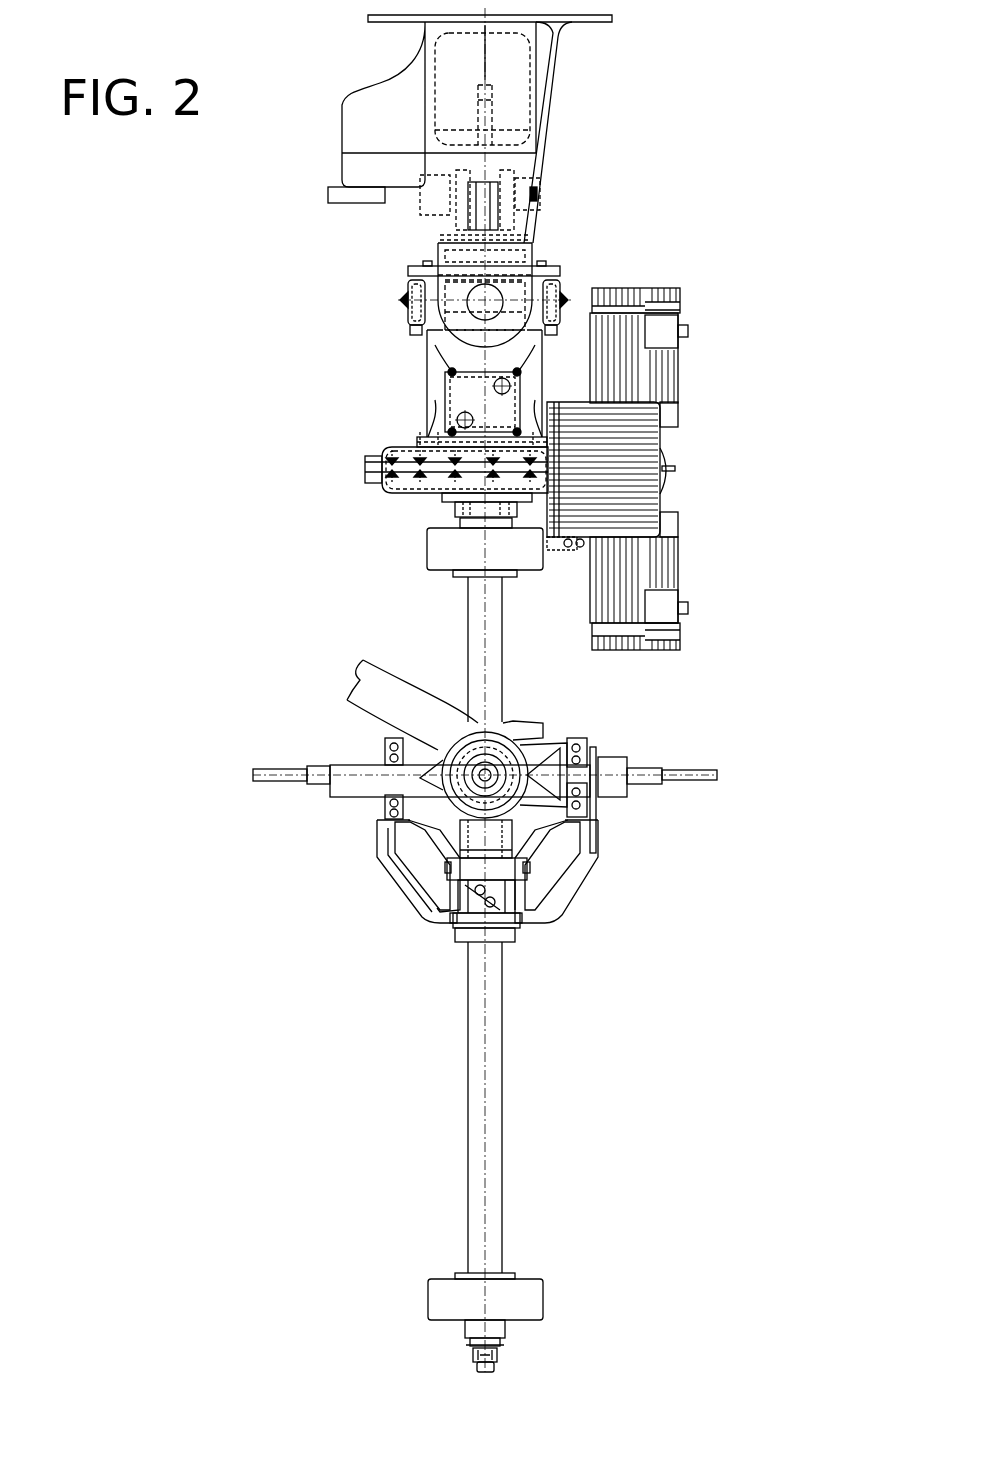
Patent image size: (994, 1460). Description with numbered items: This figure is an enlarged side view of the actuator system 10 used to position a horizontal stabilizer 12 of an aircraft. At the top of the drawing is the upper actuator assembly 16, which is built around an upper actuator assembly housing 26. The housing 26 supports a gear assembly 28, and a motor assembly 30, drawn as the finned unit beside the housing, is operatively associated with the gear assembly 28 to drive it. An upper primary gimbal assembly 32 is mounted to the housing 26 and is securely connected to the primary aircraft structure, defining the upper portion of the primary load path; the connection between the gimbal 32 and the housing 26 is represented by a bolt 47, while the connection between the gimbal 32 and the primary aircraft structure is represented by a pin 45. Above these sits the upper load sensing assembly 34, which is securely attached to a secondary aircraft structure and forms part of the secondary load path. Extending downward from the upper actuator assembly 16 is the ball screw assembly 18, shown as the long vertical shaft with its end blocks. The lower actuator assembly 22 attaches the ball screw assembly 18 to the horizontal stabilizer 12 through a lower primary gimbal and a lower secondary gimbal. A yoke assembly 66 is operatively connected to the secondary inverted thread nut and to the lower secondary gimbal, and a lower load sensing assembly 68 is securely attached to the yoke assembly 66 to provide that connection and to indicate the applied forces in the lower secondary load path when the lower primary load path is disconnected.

The actuator system 10 is at (697, 248).
The horizontal stabilizer 12 is at (363, 685).
The upper actuator assembly 16 is at (318, 431).
The ball screw assembly 18 is at (467, 612).
The lower actuator assembly 22 is at (383, 886).
The upper actuator assembly housing 26 is at (422, 368).
The gear assembly 28 is at (392, 494).
The motor assembly 30 is at (682, 367).
The upper primary gimbal assembly 32 is at (563, 272).
The upper load sensing assembly 34 is at (435, 208).
The pin 45 is at (502, 281).
The bolt 47 is at (401, 300).
The yoke assembly 66 is at (581, 898).
The lower load sensing assembly 68 is at (345, 753).